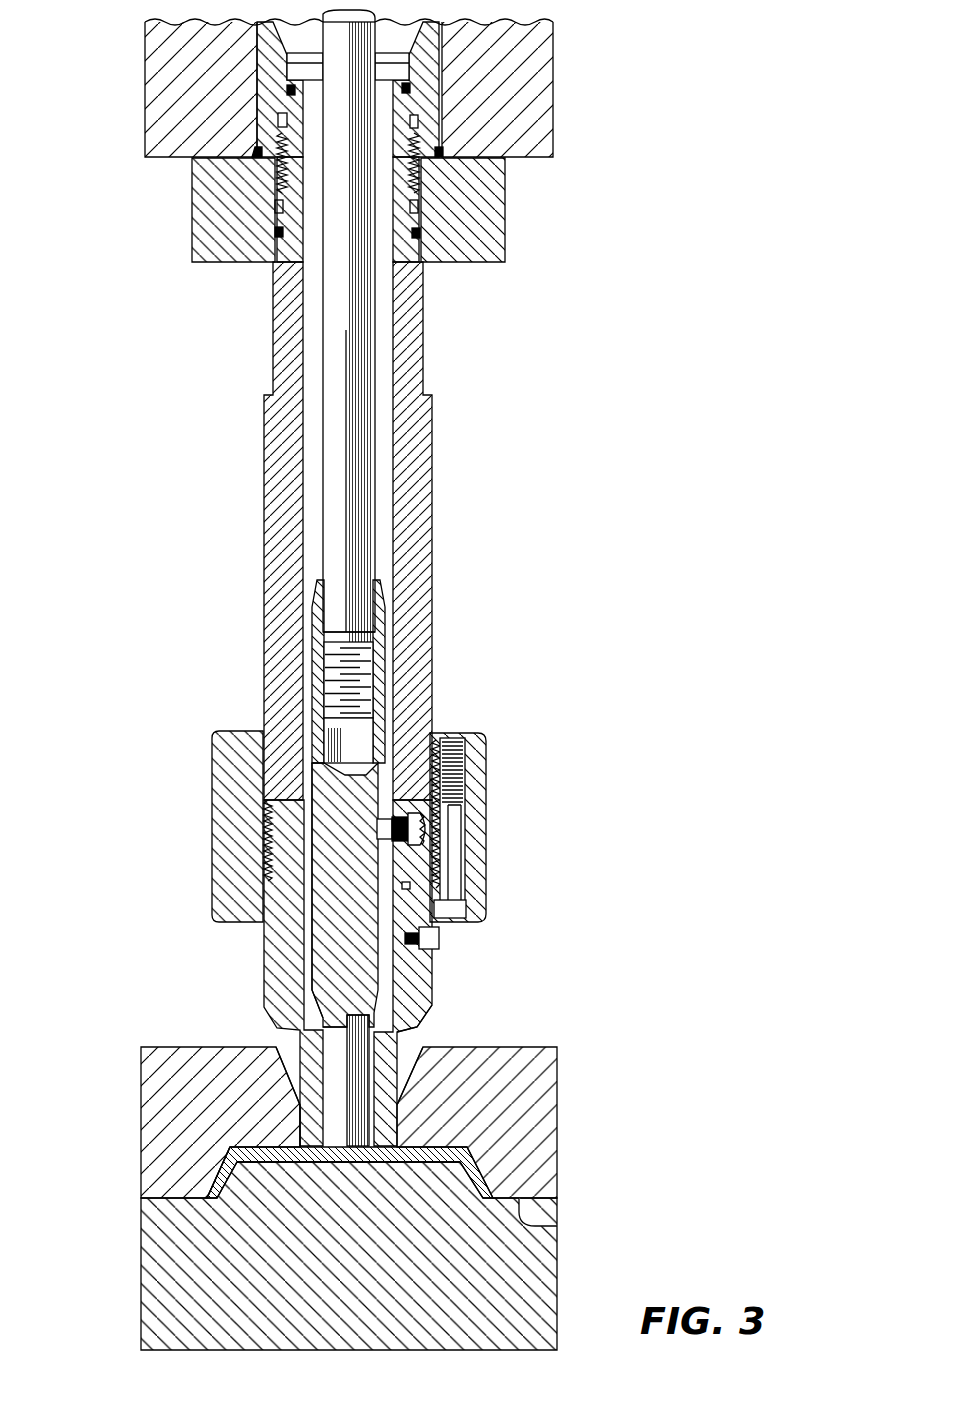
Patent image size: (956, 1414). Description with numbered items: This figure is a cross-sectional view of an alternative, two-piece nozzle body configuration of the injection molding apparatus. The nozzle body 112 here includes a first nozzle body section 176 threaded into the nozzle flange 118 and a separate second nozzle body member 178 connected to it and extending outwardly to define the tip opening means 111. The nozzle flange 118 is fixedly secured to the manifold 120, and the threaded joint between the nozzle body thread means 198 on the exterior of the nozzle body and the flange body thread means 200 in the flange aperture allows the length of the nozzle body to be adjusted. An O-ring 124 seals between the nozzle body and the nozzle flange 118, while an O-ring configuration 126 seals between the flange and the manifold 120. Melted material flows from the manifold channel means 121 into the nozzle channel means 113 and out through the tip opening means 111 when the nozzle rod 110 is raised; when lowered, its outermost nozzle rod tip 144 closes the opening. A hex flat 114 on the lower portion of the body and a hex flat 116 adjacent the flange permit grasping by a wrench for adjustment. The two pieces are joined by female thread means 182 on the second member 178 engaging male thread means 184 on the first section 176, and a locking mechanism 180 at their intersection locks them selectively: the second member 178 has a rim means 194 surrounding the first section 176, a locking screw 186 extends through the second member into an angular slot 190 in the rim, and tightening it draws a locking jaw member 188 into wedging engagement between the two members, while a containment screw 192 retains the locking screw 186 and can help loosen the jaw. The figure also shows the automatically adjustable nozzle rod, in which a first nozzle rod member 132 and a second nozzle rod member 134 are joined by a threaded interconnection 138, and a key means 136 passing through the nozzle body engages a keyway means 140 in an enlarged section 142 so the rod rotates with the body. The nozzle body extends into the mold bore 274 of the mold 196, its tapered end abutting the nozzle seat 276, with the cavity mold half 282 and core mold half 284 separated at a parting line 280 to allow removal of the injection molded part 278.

The nozzle rod 110 is at (345, 295).
The tip opening means 111 is at (300, 1118).
The nozzle body 112 is at (349, 531).
The nozzle channel means 113 is at (312, 353).
The hex flat 114 is at (420, 1090).
The hex flat 116 is at (275, 385).
The nozzle flange 118 is at (500, 195).
The manifold 120 is at (538, 75).
The manifold channel means 121 is at (412, 40).
The O-ring 124 is at (287, 90).
The O-ring configuration 126 is at (443, 152).
The first nozzle rod member 132 is at (335, 505).
The second nozzle rod member 134 is at (318, 948).
The key means 136 is at (400, 828).
The threaded interconnection 138 is at (324, 660).
The keyway means 140 is at (430, 992).
The enlarged section 142 is at (322, 795).
The nozzle rod tip 144 is at (360, 1160).
The first nozzle body section 176 is at (408, 375).
The second nozzle body member 178 is at (270, 985).
The locking mechanism 180 is at (477, 848).
The female thread means 182 is at (250, 855).
The male thread means 184 is at (262, 817).
The locking screw 186 is at (453, 890).
The locking jaw member 188 is at (462, 737).
The angular slot 190 is at (470, 747).
The containment screw 192 is at (440, 942).
The rim means 194 is at (458, 775).
The mold 196 is at (372, 1242).
The nozzle body thread means 198 is at (280, 183).
The flange body thread means 200 is at (440, 152).
The mold bore 274 is at (287, 1062).
The nozzle seat 276 is at (330, 1125).
The injection molded part 278 is at (220, 1180).
The parting line 280 is at (520, 1205).
The cavity mold half 282 is at (522, 1105).
The core mold half 284 is at (522, 1312).